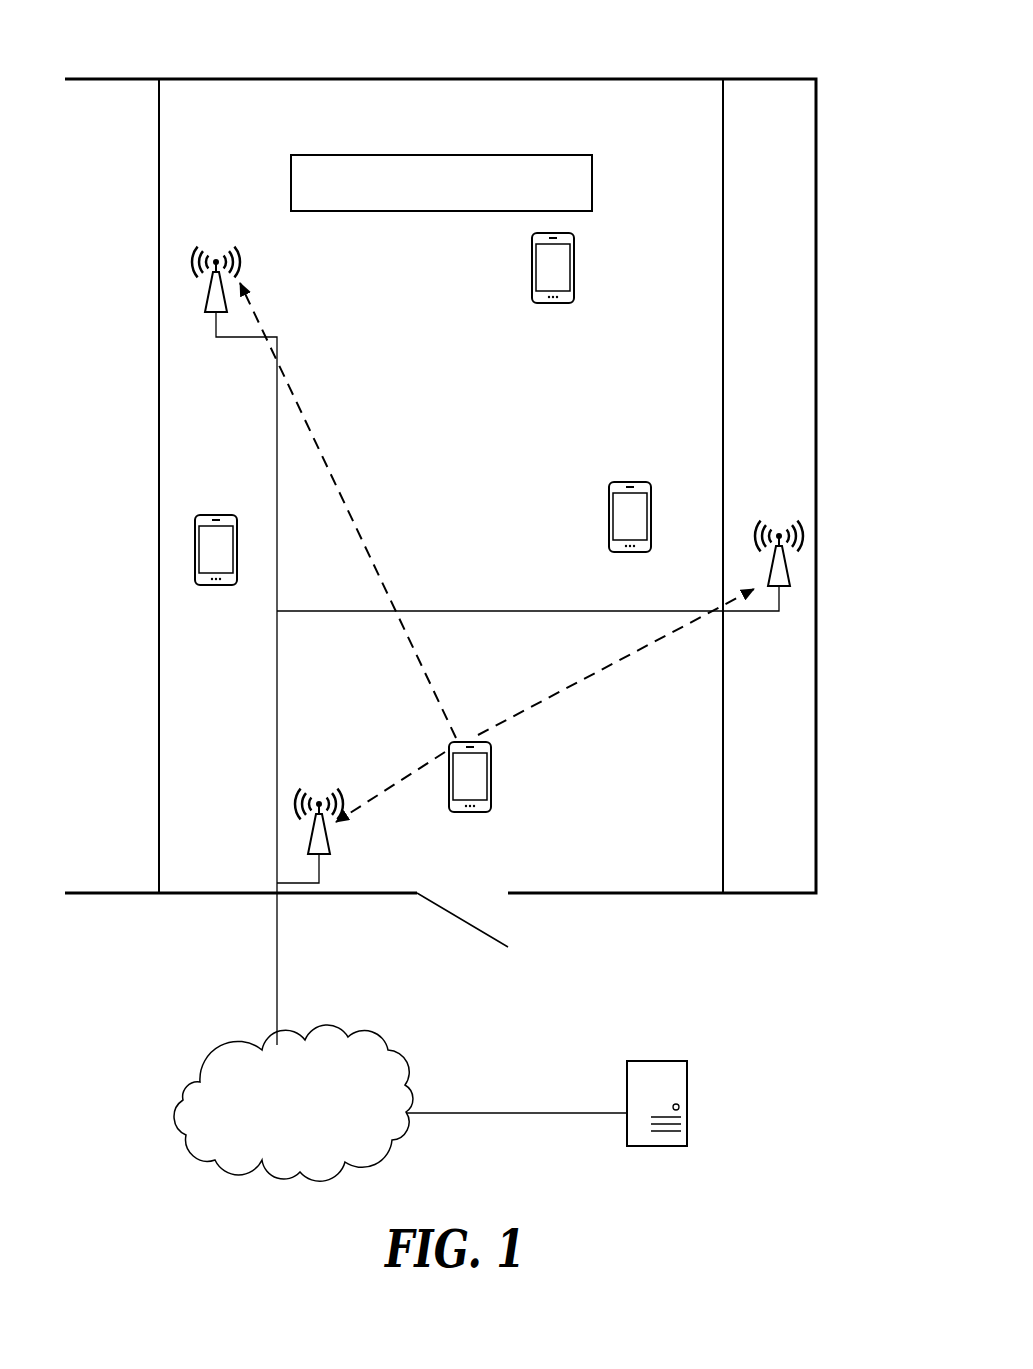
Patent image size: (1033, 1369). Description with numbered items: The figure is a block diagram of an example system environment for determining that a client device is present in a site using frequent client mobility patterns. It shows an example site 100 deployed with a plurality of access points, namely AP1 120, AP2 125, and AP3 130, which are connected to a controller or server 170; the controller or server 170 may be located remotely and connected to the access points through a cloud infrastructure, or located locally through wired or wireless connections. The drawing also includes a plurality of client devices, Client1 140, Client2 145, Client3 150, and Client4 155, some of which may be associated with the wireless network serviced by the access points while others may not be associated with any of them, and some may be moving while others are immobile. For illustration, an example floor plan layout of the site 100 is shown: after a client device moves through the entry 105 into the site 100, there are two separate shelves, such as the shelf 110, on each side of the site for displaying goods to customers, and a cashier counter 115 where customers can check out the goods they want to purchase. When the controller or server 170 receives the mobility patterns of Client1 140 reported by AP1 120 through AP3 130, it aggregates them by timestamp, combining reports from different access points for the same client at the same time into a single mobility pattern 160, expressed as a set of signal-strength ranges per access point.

The site 100 is at (188, 78).
The entry 105 is at (405, 963).
The shelf 110 is at (789, 470).
The cashier counter 115 is at (424, 203).
The AP1 120 is at (237, 839).
The AP2 125 is at (764, 641).
The AP3 130 is at (205, 356).
The Client1 140 is at (532, 830).
The Client2 145 is at (219, 641).
The Client3 150 is at (631, 616).
The Client4 155 is at (536, 366).
The mobility pattern 160 is at (560, 830).
The controller or server 170 is at (674, 1215).